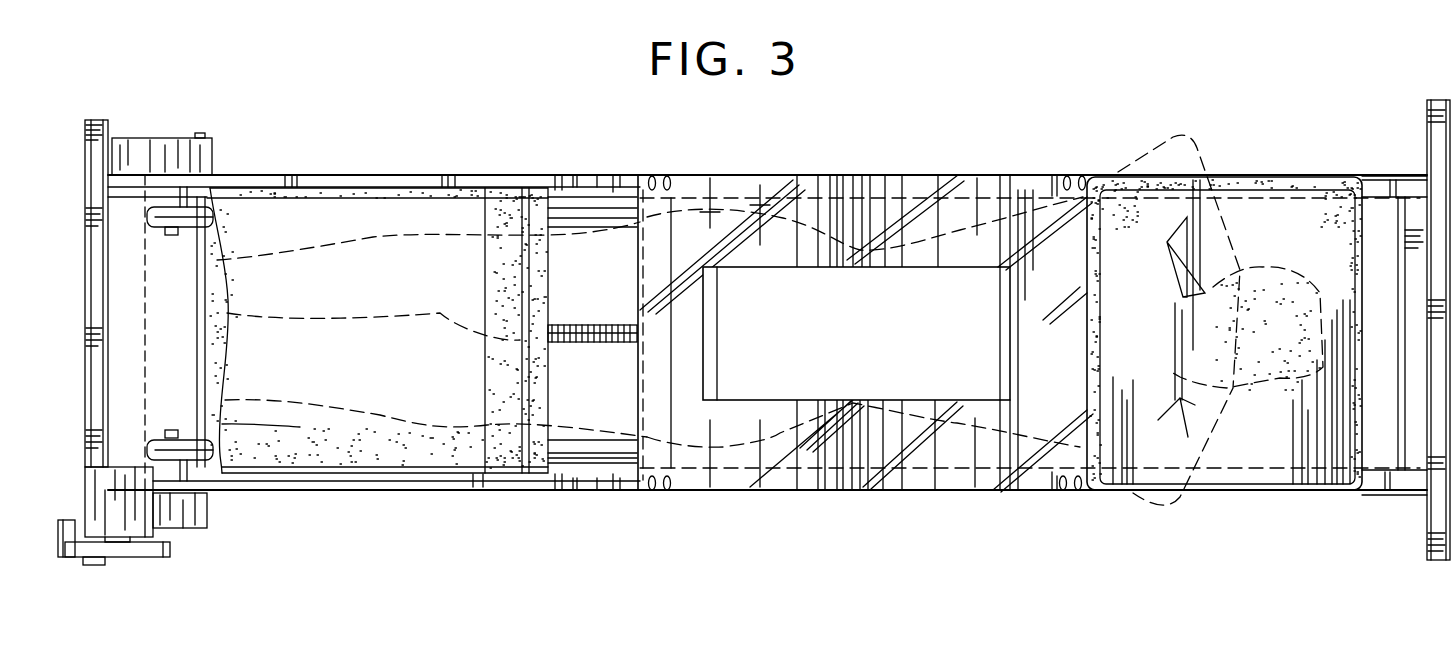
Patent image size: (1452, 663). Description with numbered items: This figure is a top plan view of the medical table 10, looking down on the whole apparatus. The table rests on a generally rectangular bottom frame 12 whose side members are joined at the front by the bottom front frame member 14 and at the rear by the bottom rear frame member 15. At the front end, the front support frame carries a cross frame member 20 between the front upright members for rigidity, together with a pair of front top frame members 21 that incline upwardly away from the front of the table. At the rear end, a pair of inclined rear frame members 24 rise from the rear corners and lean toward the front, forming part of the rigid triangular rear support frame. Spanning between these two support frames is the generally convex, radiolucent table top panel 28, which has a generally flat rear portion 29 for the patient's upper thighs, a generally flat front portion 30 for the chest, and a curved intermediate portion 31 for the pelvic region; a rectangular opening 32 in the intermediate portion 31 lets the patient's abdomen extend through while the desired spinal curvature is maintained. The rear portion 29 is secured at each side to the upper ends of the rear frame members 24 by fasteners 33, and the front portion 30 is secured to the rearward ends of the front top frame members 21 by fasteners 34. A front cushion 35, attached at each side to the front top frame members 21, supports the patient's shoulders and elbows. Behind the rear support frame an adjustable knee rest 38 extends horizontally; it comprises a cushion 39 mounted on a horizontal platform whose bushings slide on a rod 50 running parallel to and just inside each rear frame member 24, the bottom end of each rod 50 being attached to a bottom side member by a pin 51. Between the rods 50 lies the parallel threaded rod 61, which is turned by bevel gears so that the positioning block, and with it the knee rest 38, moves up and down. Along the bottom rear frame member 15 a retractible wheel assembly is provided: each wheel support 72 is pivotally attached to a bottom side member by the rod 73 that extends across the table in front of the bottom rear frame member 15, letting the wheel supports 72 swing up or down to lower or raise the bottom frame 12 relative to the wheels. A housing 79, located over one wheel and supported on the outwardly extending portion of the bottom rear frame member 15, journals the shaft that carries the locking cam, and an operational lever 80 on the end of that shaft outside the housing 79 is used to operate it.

The medical table 10 is at (894, 174).
The bottom frame 12 is at (960, 480).
The bottom front frame member 14 is at (1433, 347).
The bottom rear frame member 15 is at (95, 352).
The cross frame member 20 is at (1418, 273).
The front top frame members 21 is at (1377, 188).
The inclined rear frame members 24 is at (408, 182).
The table top panel 28 is at (806, 191).
The rear portion 29 is at (745, 453).
The front portion 30 is at (1040, 457).
The curved intermediate portion 31 is at (910, 460).
The rectangular opening 32 is at (978, 398).
The fasteners 33 is at (667, 176).
The fasteners 34 is at (1076, 186).
The front cushion 35 is at (1255, 207).
The adjustable knee rest 38 is at (326, 187).
The cushion 39 is at (440, 447).
The rod 50 is at (155, 217).
The pin 51 is at (172, 236).
The threaded rod 61 is at (613, 322).
The wheel support 72 is at (156, 150).
The rod 73 is at (200, 309).
The housing 79 is at (107, 485).
The operational lever 80 is at (153, 551).